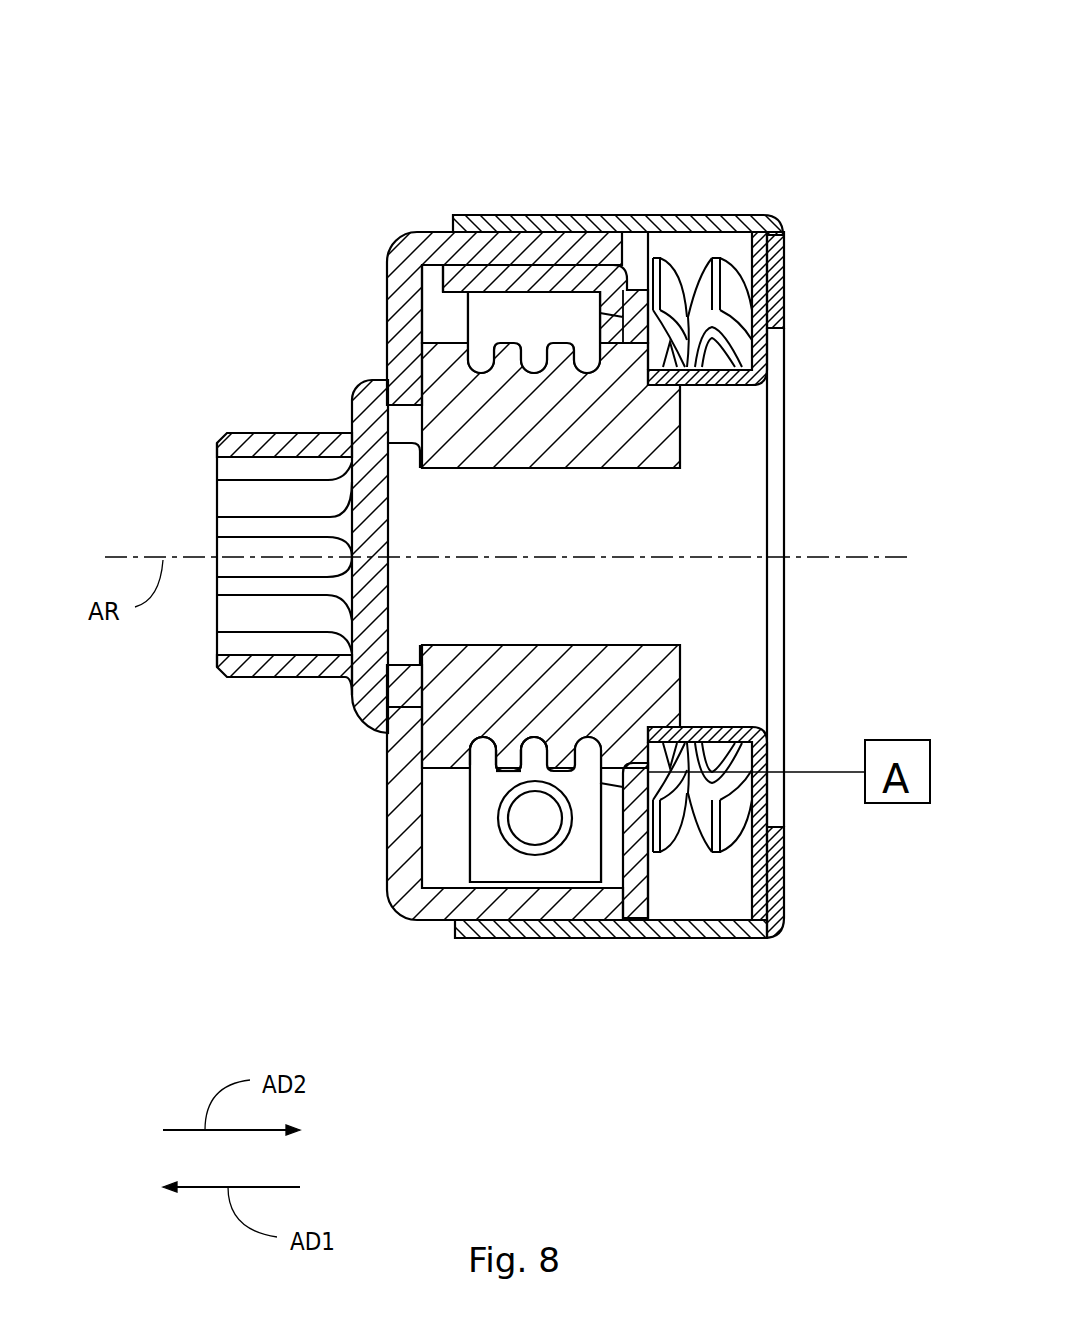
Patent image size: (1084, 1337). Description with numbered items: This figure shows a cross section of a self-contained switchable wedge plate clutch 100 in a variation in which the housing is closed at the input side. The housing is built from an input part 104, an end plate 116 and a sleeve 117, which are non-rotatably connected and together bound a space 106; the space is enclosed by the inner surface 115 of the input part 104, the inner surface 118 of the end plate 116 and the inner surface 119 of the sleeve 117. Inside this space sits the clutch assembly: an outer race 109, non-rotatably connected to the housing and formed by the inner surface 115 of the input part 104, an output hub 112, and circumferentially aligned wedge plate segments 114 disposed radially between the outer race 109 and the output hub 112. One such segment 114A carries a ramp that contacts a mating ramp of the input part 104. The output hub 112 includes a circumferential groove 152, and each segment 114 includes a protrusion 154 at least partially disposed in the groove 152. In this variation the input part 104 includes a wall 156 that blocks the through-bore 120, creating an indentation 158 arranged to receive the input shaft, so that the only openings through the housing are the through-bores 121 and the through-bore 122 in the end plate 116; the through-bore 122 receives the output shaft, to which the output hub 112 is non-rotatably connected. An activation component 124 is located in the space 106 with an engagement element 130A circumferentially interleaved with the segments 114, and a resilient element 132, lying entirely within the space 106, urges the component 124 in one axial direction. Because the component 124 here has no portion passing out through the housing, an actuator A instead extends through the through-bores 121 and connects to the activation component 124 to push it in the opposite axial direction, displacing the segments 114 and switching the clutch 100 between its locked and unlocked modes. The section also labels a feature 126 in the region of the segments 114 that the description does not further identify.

The switchable wedge plate clutch 100 is at (683, 62).
The input part 104 is at (298, 428).
The space 106 is at (688, 253).
The outer race 109 is at (515, 300).
The output hub 112 is at (413, 370).
The circumferentially aligned wedge plate segments 114 is at (512, 872).
The segment 114A is at (533, 290).
The inner surface of input part 115 is at (432, 300).
The end plate 116 is at (774, 347).
The sleeve 117 is at (543, 210).
The inner surface of end plate 118 is at (752, 872).
The inner surface of sleeve 119 is at (710, 912).
The through-bore 120 is at (227, 465).
The through-bore 121 is at (765, 752).
The through-bore 122 is at (732, 455).
The component 124 is at (593, 260).
The hole 126 is at (537, 857).
The gap 130A is at (452, 282).
The resilient element 132 is at (730, 262).
The circumferential groove 152 is at (513, 777).
The protrusion 154 is at (500, 750).
The wall 156 is at (350, 603).
The indentation 158 is at (215, 547).